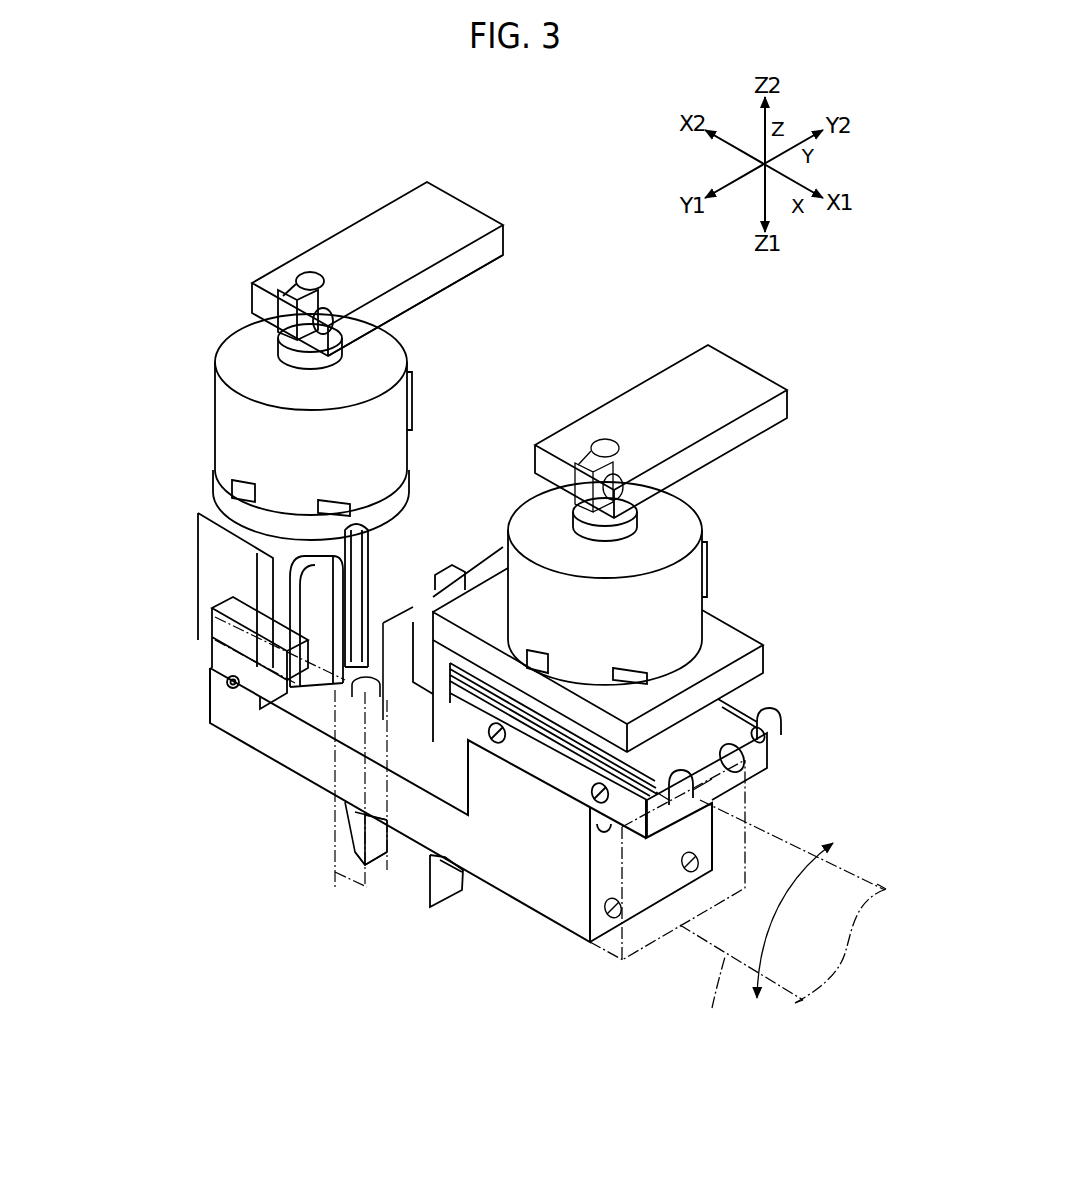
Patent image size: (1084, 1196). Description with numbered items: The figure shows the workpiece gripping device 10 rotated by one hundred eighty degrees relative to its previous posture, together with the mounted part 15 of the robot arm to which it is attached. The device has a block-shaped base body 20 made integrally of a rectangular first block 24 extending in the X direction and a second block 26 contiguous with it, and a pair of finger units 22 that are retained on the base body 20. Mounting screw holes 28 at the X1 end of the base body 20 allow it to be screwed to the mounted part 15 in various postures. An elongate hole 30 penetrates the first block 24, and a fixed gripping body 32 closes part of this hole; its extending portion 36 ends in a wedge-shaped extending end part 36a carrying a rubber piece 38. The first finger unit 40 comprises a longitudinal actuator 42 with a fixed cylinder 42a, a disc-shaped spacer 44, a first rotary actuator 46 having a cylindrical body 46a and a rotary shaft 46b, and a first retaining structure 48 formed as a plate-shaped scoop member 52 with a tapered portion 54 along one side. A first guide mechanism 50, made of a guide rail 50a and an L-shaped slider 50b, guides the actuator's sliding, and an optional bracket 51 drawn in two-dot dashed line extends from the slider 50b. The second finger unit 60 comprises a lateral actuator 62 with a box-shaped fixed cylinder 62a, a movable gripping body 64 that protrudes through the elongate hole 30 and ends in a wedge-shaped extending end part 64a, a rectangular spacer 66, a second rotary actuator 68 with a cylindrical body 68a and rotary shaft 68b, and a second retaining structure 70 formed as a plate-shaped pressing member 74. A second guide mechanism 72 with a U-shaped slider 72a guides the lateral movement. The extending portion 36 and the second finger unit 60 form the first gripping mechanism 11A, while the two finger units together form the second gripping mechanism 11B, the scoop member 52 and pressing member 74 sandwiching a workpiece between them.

The workpiece gripping device 10 is at (253, 112).
The first gripping mechanism 11A is at (352, 962).
The second gripping mechanism 11B is at (553, 237).
The mounted part 15 is at (738, 898).
The base body 20 is at (461, 786).
The pair of finger units 22 is at (480, 578).
The first block 24 is at (272, 747).
The second block 26 is at (483, 782).
The mounting screw holes 28 is at (618, 912).
The elongate hole 30 is at (392, 697).
The fixed gripping body 32 is at (324, 808).
The extending portion 36 is at (324, 808).
The extending end part 36a is at (336, 872).
The rubber piece 38 is at (376, 851).
The first finger unit 40 is at (193, 503).
The longitudinal actuator 42 is at (375, 581).
The fixed cylinder 42a is at (364, 557).
The spacer 44 is at (220, 485).
The first rotary actuator 46 is at (311, 422).
The cylindrical body 46a is at (227, 327).
The rotary shaft 46b is at (320, 337).
The first retaining structure 48 is at (367, 269).
The first guide mechanism 50 is at (231, 707).
The guide rail 50a is at (250, 688).
The slider 50b is at (202, 617).
The bracket 51 is at (375, 803).
The scoop member 52 is at (362, 220).
The tapered portion 54 is at (433, 270).
The second finger unit 60 is at (757, 567).
The lateral actuator 62 is at (652, 753).
The fixed cylinder 62a is at (547, 772).
The movable gripping body 64 is at (458, 761).
The extending end part 64a is at (432, 908).
The spacer 66 is at (770, 664).
The second rotary actuator 68 is at (653, 583).
The cylindrical body 68a is at (673, 615).
The rotary shaft 68b is at (604, 508).
The second retaining structure 70 is at (661, 426).
The second guide mechanism 72 is at (652, 734).
The slider 72a is at (782, 714).
The pressing member 74 is at (672, 365).